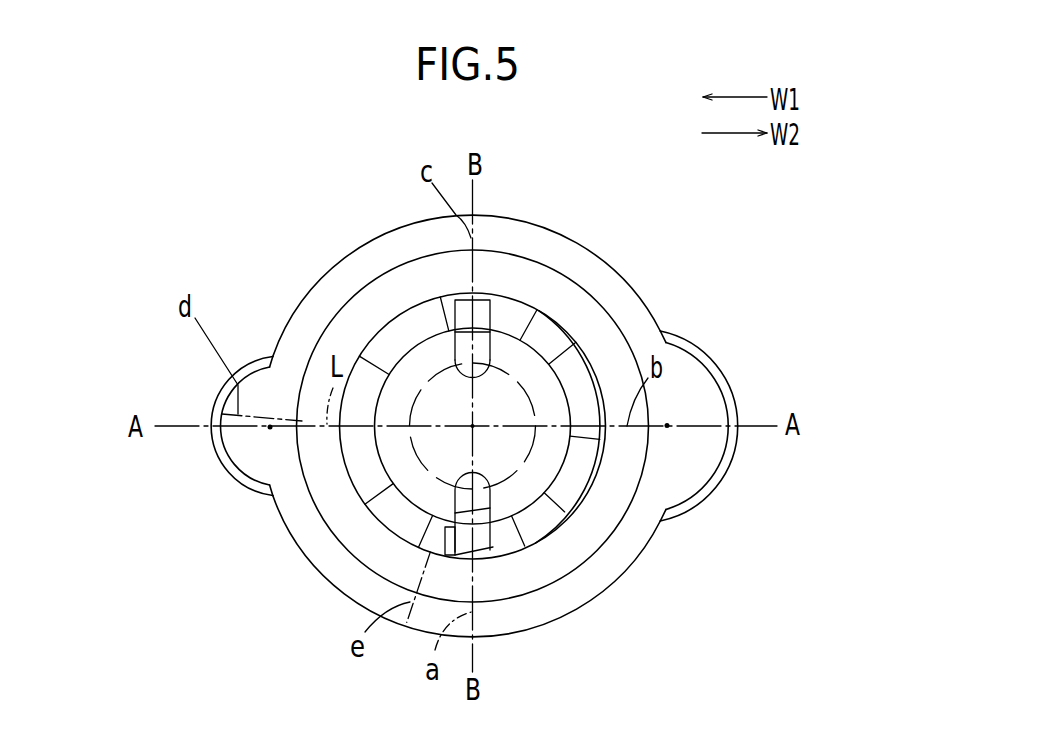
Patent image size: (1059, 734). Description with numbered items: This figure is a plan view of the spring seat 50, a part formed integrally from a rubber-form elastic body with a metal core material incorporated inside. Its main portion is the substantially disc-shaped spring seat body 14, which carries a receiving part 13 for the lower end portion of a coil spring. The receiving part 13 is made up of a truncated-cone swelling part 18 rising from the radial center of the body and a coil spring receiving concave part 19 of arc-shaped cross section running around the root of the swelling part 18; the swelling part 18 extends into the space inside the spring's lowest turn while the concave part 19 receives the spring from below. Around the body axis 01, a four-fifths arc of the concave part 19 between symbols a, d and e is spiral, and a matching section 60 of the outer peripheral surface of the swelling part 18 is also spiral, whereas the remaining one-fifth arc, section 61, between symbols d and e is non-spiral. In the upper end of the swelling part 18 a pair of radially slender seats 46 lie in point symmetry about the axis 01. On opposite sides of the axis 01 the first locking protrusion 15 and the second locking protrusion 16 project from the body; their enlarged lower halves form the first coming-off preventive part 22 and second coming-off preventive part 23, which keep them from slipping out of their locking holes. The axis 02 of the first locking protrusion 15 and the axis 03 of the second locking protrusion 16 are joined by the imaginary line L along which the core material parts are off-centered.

The spring seat 50 is at (183, 247).
The spring seat body 14 is at (295, 277).
The second locking protrusion 16 is at (198, 437).
The second coming-off preventive part 23 is at (210, 443).
The axis of the second locking protrusion 03 is at (270, 427).
The first locking protrusion 15 is at (735, 397).
The first coming-off preventive part 22 is at (735, 393).
The axis of the first locking protrusion 02 is at (667, 426).
The receiving part 13 is at (489, 382).
The coil spring receiving concave part 19 is at (398, 283).
The swelling part 18 is at (532, 363).
The section of four-fifths arc of the outer peripheral surface of the swelling part 60 is at (595, 468).
The section of one-fifth arc 61 is at (358, 488).
The axis of the spring seat body 01 is at (472, 426).
The seats 46 is at (482, 305).